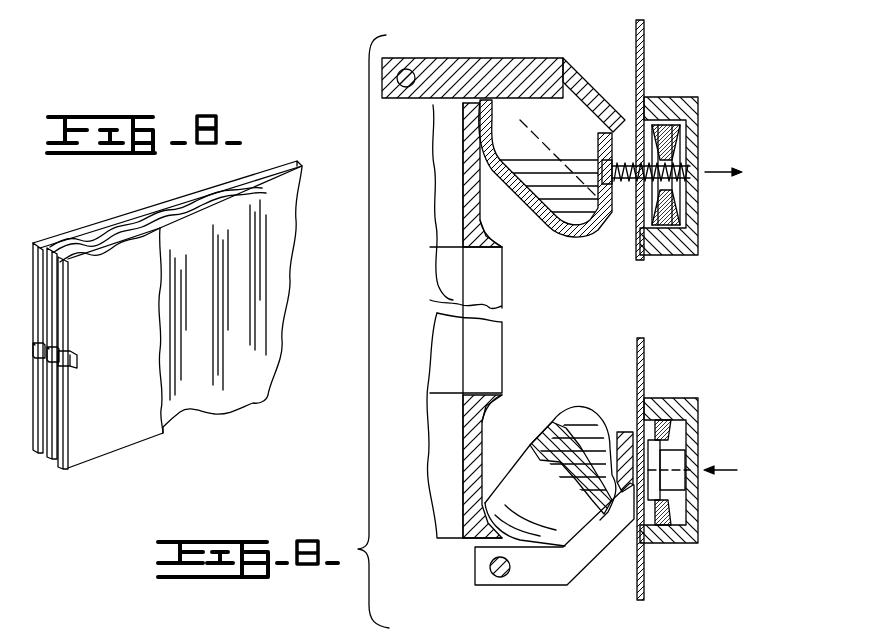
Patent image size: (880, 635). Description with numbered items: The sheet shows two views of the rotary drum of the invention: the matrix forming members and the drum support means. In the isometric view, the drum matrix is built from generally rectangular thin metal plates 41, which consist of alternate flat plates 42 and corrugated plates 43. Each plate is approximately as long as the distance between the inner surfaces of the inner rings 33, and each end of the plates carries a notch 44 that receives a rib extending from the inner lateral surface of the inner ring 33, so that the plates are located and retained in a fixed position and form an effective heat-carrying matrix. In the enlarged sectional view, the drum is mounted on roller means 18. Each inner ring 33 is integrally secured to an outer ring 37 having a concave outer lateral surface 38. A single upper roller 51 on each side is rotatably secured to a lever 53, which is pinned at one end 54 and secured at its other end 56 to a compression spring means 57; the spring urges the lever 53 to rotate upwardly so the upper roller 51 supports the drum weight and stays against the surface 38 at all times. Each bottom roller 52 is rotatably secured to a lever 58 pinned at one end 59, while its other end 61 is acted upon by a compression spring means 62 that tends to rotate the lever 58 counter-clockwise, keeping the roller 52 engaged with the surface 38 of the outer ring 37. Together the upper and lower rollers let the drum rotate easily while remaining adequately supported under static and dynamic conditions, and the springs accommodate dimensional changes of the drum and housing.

In FIG. 9, the roller means 18 is at (573, 236).
In FIG. 9, the inner ring 33 is at (447, 163).
In FIG. 9, the outer ring 37 is at (468, 133).
In FIG. 9, the concave outer lateral surface 38 is at (484, 230).
In FIG. 8, the thin metal plates 41 is at (141, 427).
In FIG. 8, the flat plates 42 is at (97, 223).
In FIG. 8, the corrugated plates 43 is at (150, 218).
In FIG. 8, the notch 44 is at (43, 348).
In FIG. 9, the upper roller 51 is at (566, 230).
In FIG. 9, the lower roller 52 is at (565, 408).
In FIG. 9, the lever 53 is at (562, 65).
In FIG. 9, the pinned end 54 is at (401, 68).
In FIG. 9, the other end 56 is at (618, 207).
In FIG. 9, the compression spring means 57 is at (668, 122).
In FIG. 9, the lever 58 is at (592, 547).
In FIG. 9, the pinned end 59 is at (484, 565).
In FIG. 9, the other end 61 is at (633, 408).
In FIG. 9, the compression spring means 62 is at (666, 440).